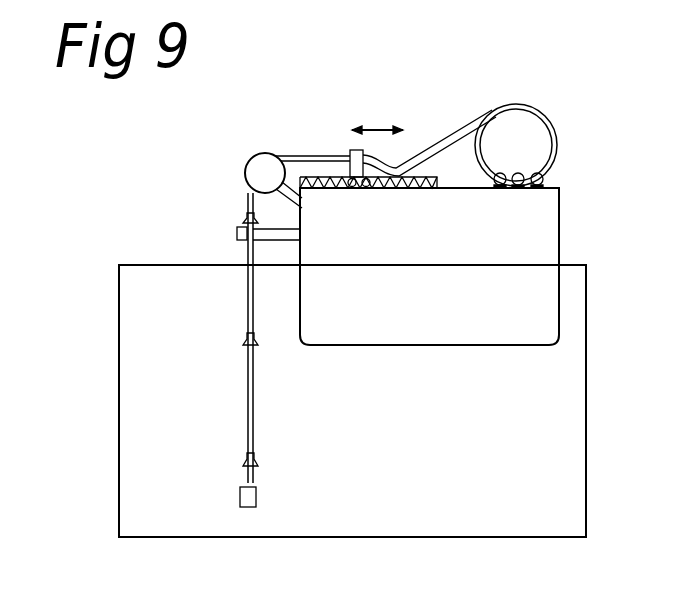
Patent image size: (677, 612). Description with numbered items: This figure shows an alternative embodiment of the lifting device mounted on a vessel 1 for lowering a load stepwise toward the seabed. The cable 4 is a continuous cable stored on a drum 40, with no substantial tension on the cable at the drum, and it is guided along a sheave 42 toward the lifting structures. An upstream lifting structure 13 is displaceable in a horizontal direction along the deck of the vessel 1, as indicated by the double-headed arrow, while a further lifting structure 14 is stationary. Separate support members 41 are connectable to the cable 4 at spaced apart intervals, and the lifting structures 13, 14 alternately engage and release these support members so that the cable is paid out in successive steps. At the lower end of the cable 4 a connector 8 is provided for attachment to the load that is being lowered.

The vessel 1 is at (542, 212).
The cable 4 is at (248, 395).
The connector 8 is at (252, 490).
The upstream lifting structure 13 is at (350, 157).
The lifting structure 14 is at (237, 229).
The drum 40 is at (515, 131).
The support members 41 is at (500, 172).
The sheave 42 is at (252, 169).